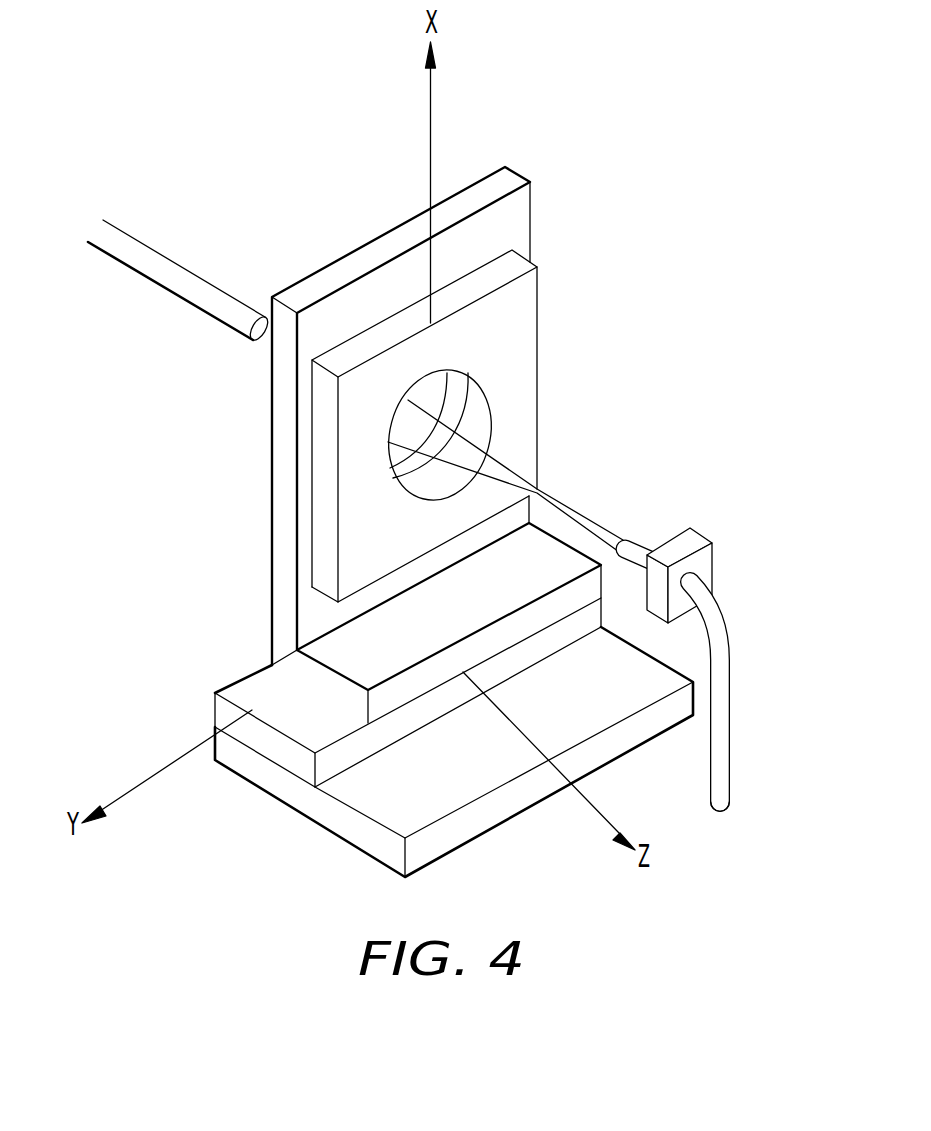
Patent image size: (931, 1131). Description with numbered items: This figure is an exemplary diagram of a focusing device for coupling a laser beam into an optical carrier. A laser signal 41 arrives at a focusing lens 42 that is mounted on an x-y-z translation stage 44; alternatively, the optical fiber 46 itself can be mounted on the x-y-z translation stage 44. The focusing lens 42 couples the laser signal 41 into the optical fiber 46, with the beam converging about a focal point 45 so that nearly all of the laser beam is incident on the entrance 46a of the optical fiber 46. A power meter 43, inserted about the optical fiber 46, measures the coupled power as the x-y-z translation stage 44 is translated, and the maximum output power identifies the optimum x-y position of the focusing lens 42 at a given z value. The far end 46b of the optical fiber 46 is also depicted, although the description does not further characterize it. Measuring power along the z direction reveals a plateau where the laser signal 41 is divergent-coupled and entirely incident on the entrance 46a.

The laser signal 41 is at (143, 258).
The focusing lens 42 is at (530, 290).
The power meter 43 is at (715, 557).
The x-y-z translation stage 44 is at (277, 604).
The focal point 45 is at (570, 510).
The optical fiber 46 is at (725, 648).
The entrance of the optical fiber 46a is at (625, 538).
The cable free end 46b is at (720, 806).